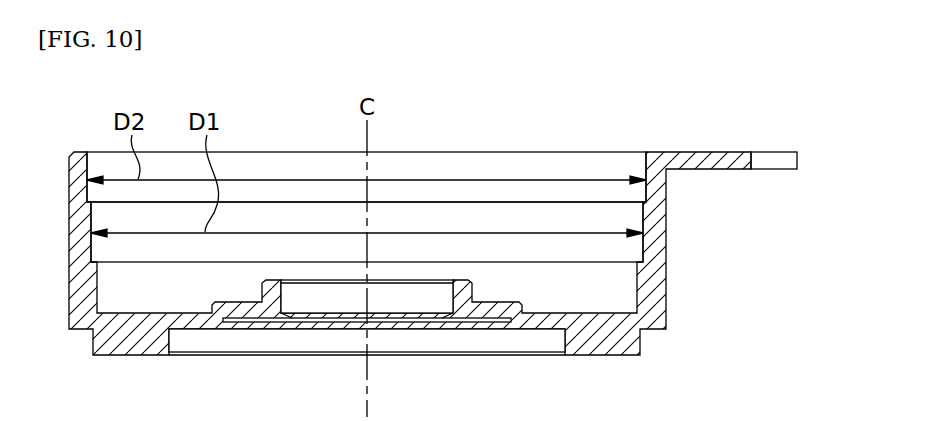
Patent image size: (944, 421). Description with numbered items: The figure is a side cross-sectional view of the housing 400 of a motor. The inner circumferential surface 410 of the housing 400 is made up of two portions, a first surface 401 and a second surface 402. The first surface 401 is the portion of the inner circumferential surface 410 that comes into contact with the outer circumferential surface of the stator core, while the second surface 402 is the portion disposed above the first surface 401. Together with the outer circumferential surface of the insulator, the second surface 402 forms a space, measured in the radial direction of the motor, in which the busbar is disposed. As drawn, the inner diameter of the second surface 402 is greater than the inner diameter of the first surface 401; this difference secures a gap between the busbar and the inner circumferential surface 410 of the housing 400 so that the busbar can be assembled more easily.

The housing 400 is at (680, 313).
The first surface 401 is at (647, 242).
The second surface 402 is at (647, 183).
The inner circumferential surface 410 is at (474, 210).